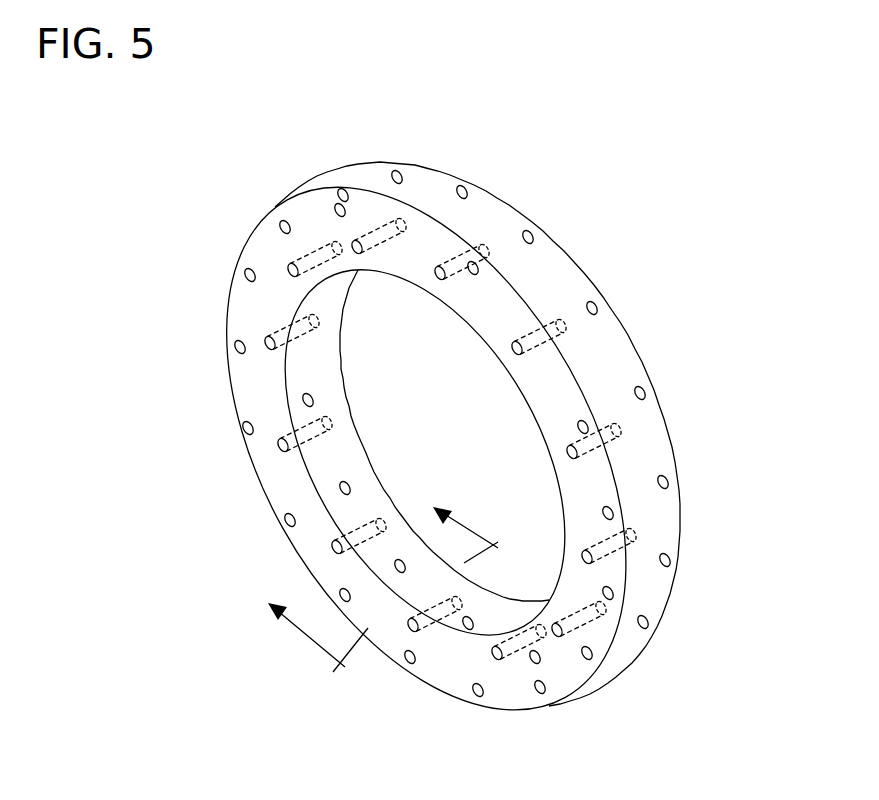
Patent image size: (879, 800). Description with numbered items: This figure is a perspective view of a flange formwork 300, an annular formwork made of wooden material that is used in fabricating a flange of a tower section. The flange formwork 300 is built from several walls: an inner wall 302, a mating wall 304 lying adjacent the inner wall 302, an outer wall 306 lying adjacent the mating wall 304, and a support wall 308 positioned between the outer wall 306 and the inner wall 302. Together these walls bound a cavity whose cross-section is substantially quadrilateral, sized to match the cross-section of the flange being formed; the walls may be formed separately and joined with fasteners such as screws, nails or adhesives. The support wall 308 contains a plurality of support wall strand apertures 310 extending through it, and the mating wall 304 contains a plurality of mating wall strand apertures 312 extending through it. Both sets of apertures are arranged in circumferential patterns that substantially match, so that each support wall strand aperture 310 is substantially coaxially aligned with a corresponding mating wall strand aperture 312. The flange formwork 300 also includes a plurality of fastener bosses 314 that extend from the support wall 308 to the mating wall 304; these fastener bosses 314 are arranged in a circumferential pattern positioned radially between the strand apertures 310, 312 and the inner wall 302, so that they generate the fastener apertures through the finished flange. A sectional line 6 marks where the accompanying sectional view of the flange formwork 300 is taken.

The flange formwork 300 is at (633, 189).
The inner wall 302 is at (353, 457).
The mating wall 304 is at (246, 402).
The outer wall 306 is at (607, 347).
The support wall 308 is at (305, 365).
The support wall strand apertures 310 is at (528, 235).
The mating wall strand apertures 312 is at (470, 693).
The fastener bosses 314 is at (603, 553).
The sectional line 6 is at (396, 592).